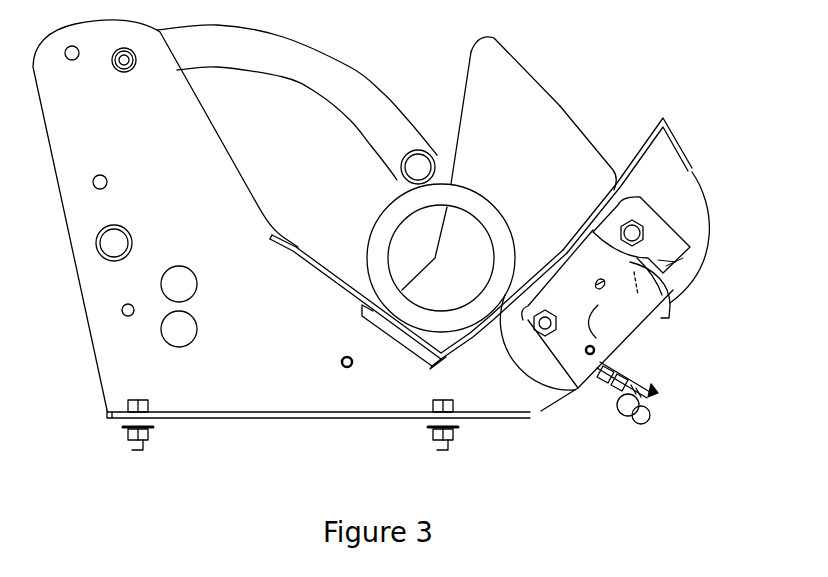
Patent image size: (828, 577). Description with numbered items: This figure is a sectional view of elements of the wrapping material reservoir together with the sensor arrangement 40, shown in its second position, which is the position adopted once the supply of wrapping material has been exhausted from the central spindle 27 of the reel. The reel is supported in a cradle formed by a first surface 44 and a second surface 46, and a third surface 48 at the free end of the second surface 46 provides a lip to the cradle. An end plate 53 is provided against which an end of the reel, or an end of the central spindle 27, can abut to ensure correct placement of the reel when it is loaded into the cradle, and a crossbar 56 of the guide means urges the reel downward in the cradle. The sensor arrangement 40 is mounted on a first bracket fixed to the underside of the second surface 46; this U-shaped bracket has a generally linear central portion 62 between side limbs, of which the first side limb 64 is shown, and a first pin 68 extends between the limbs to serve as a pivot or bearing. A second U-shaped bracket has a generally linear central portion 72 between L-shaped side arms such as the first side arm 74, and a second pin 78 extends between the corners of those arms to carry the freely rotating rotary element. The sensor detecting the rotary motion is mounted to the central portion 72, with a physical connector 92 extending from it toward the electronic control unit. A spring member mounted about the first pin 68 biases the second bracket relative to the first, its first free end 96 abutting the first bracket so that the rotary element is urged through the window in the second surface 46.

The central spindle 27 is at (480, 197).
The sensor arrangement 40 is at (515, 348).
The first surface 44 is at (339, 279).
The second surface 46 is at (533, 126).
The third surface 48 is at (647, 140).
The end plate 53 is at (517, 78).
The crossbar 56 is at (404, 178).
The central portion 62 is at (683, 268).
The first side limb 64 is at (668, 237).
The first pin 68 is at (633, 233).
The central portion 72 is at (580, 388).
The first side arm 74 is at (587, 293).
The second pin 78 is at (548, 323).
The physical connector 92 is at (657, 396).
The first free end 96 is at (677, 310).